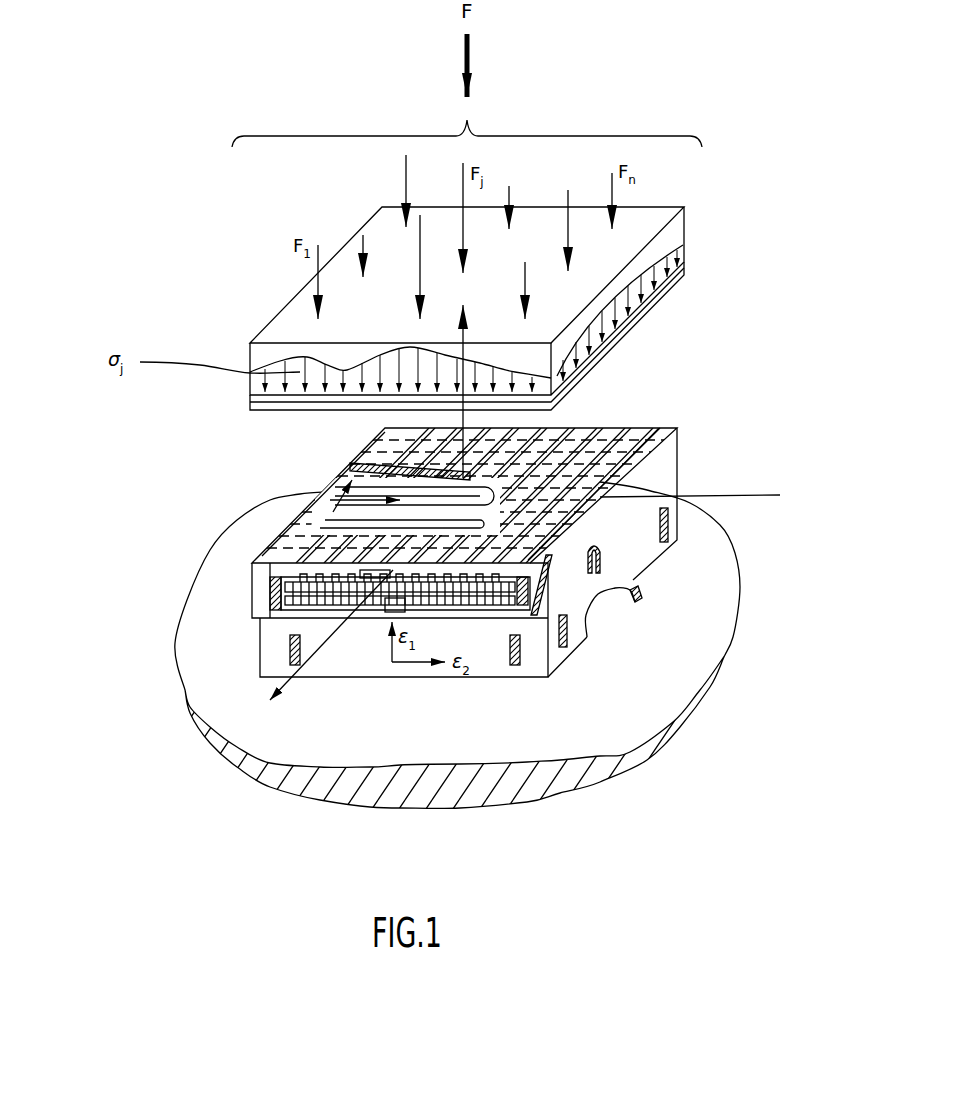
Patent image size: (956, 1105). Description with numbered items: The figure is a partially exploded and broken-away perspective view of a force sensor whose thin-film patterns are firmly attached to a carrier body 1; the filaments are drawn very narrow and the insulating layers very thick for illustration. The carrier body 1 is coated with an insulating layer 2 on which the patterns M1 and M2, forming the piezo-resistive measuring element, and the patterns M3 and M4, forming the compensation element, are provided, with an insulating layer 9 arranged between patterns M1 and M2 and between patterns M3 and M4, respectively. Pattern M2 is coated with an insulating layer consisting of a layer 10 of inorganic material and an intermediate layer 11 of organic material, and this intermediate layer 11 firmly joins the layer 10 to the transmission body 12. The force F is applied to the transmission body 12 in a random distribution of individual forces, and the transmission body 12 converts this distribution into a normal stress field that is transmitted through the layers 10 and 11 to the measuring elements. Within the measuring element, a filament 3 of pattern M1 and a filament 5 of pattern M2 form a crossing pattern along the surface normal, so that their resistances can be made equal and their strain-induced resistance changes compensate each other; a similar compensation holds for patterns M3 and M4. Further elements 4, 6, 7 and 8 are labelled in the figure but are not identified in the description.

The carrier body 1 is at (600, 605).
The insulating layer 2 is at (637, 590).
The filament 3 is at (353, 527).
The strain gauge 4 is at (333, 517).
The filament 5 is at (690, 447).
The cover film 6 is at (655, 442).
The electronic circuit 7 is at (297, 570).
The flexible connecting foil 8 is at (508, 612).
The insulating layer 9 is at (690, 470).
The layer of inorganic material 10 is at (688, 270).
The intermediate layer 11 is at (688, 260).
The transmission body 12 is at (668, 238).
The pattern M1 is at (705, 496).
The pattern M2 is at (562, 432).
The pattern M3 is at (397, 600).
The pattern M4 is at (365, 600).